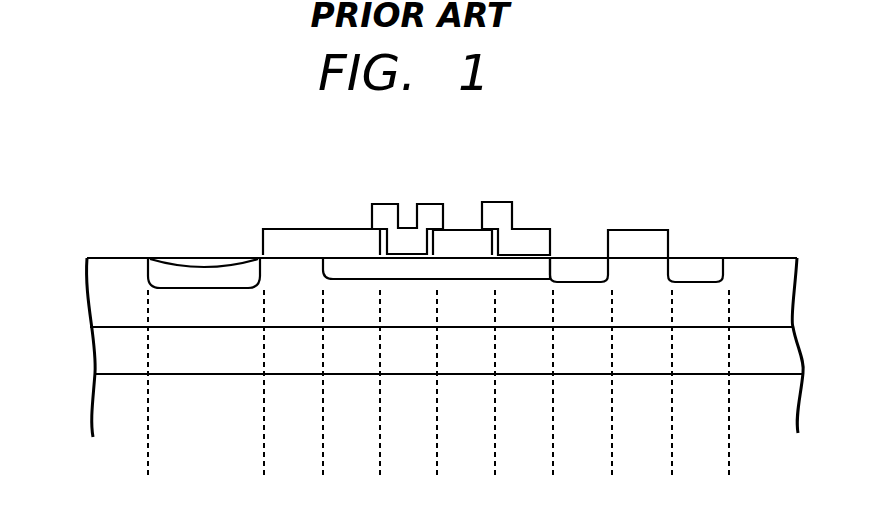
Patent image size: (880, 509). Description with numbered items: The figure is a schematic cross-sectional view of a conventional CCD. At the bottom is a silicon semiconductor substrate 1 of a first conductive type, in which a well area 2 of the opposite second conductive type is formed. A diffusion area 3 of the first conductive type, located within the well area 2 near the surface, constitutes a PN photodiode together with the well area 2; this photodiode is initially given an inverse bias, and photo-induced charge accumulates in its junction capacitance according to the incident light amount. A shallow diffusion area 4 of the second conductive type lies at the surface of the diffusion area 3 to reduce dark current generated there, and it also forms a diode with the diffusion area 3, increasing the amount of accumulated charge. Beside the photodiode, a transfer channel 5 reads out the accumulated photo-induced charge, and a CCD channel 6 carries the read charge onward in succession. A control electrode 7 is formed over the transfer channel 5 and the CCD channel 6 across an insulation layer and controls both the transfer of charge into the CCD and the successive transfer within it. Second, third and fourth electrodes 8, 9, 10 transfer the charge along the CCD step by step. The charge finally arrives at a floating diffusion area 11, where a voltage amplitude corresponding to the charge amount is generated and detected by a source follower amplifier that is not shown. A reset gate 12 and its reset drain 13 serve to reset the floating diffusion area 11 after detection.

The Si semiconductor substrate 1 is at (240, 358).
The well area 2 is at (183, 314).
The diffusion area 3 is at (172, 277).
The shallow diffusion area 4 is at (203, 262).
The transfer channel 5 is at (297, 258).
The CCD channel 6 is at (447, 270).
The control electrode 7 is at (296, 240).
The second electrode 8 is at (390, 213).
The third electrode 9 is at (463, 240).
The fourth electrode 10 is at (503, 213).
The floating diffusion area 11 is at (577, 267).
The reset gate 12 is at (635, 240).
The reset drain 13 is at (697, 267).